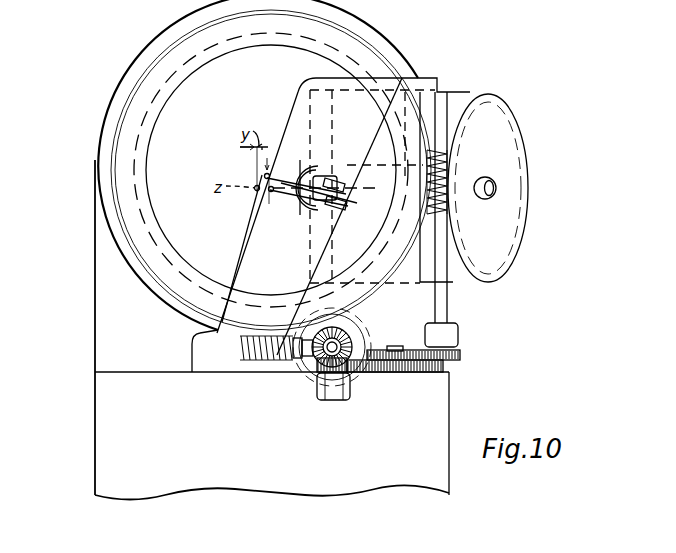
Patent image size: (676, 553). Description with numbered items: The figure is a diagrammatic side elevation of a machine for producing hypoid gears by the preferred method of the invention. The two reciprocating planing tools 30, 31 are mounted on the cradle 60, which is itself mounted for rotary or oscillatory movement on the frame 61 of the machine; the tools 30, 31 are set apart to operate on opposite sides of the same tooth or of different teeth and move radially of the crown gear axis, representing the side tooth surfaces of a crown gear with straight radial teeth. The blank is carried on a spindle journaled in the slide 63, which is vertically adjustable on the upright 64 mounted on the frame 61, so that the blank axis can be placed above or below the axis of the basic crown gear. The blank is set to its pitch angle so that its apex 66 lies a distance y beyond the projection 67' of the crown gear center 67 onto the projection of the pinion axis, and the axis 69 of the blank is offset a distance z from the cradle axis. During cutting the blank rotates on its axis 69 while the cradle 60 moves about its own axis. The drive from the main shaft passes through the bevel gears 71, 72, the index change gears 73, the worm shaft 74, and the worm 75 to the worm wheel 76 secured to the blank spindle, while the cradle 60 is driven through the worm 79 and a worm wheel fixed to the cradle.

The cradle 60 is at (162, 220).
The frame 61 is at (102, 397).
The slide 63 is at (450, 92).
The upright 64 is at (258, 232).
The apex 66 is at (255, 190).
The crown gear center 67 is at (307, 177).
The projection of the crown gear center 67' is at (283, 200).
The axis of the blank 69 is at (360, 188).
The planing tool 30 is at (322, 206).
The planing tool 31 is at (320, 173).
The bevel gear 71 is at (352, 338).
The bevel gear 72 is at (314, 362).
The index change gears 73 is at (395, 373).
The worm shaft 74 is at (446, 308).
The worm 75 is at (450, 168).
The worm wheel 76 is at (473, 103).
The worm 79 is at (258, 363).